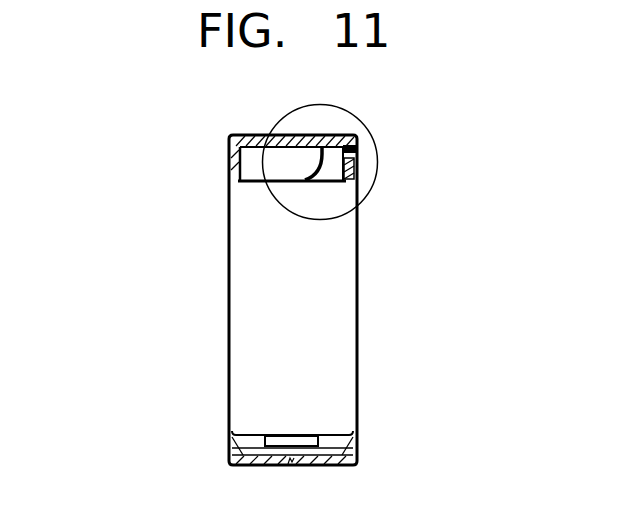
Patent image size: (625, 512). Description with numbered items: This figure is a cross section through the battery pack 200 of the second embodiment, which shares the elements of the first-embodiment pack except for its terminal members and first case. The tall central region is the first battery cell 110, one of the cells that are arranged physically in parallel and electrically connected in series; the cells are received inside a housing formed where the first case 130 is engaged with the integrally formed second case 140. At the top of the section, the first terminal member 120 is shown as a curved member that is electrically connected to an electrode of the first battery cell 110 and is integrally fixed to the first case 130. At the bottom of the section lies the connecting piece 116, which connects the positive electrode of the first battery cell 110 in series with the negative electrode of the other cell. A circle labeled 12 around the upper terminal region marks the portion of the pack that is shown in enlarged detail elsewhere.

The battery pack 200 is at (85, 95).
The first battery cell 110 is at (348, 310).
The connecting piece 116 is at (350, 448).
The first terminal member 120 is at (310, 174).
The first case 130 is at (353, 175).
The second case 140 is at (259, 145).
The detail circle of FIG. 12 is at (360, 121).